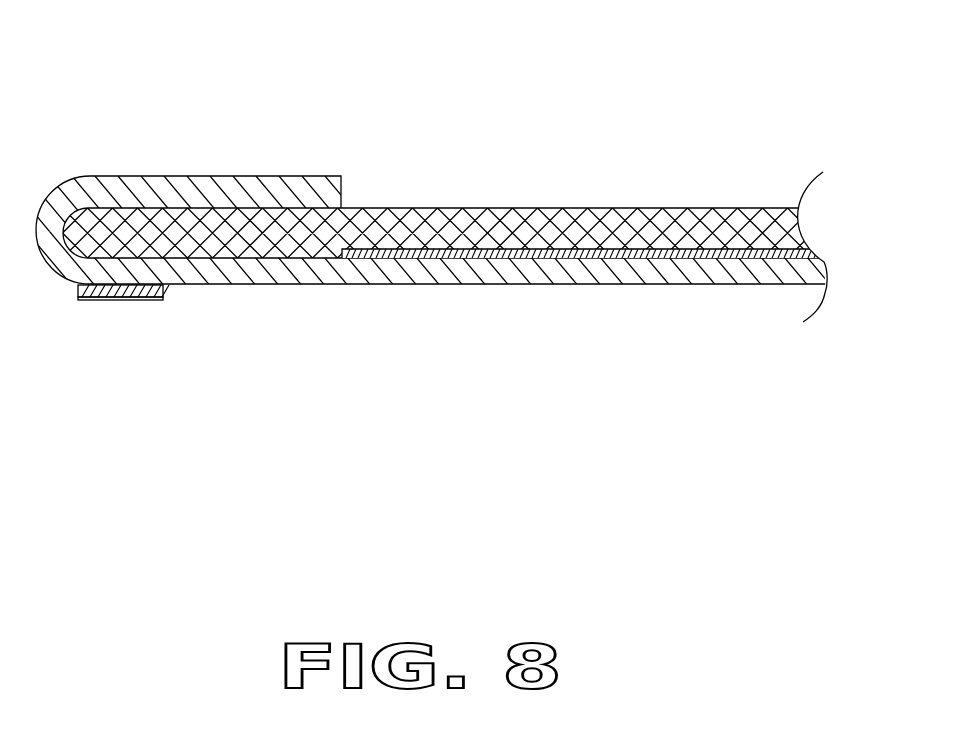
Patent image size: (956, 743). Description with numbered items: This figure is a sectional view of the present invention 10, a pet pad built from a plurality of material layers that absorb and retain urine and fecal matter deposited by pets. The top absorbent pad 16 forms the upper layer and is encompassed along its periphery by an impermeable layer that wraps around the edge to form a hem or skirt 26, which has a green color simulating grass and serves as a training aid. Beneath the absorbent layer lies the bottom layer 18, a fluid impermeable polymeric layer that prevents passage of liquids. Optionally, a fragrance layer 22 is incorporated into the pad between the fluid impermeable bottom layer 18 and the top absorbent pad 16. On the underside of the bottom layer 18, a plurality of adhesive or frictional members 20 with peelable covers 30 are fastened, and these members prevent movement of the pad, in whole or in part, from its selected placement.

The present invention 10 is at (716, 152).
The top absorbent pad 16 is at (637, 240).
The bottom layer 18 is at (472, 282).
The adhesive or frictional members 20 is at (95, 292).
The fragrance layer 22 is at (535, 248).
The hem or skirt 26 is at (133, 177).
The peelable covers 30 is at (83, 302).